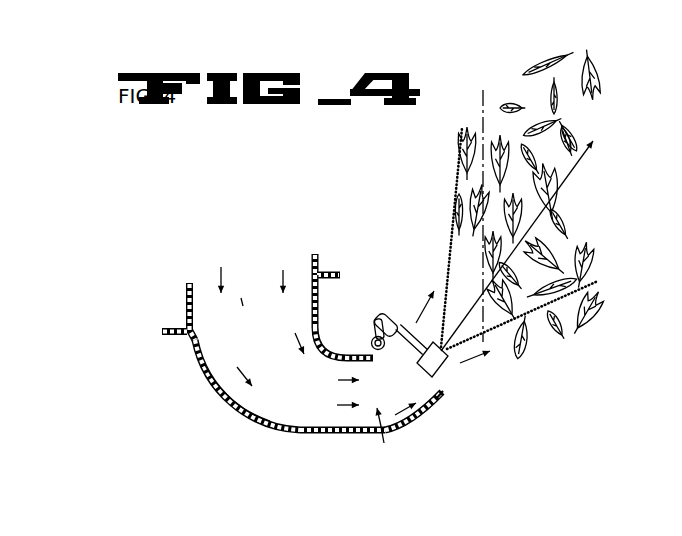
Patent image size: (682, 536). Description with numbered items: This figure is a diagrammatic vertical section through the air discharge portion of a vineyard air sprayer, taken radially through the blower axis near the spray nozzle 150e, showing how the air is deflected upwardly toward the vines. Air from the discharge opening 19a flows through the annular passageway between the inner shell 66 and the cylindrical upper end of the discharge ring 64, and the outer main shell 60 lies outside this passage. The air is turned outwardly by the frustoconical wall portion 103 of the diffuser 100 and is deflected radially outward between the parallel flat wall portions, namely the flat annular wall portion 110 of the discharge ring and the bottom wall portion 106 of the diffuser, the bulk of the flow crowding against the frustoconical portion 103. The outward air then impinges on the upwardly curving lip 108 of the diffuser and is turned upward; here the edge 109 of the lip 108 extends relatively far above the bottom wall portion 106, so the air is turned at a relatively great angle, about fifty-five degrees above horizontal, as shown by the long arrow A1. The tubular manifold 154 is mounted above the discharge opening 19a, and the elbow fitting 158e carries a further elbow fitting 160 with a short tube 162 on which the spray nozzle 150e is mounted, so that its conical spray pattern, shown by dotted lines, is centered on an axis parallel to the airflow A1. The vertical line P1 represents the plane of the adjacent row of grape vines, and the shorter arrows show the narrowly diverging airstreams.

The outer main shell 60 is at (318, 257).
The discharge ring 64 is at (311, 312).
The inner shell 66 is at (186, 288).
The diffuser 100 is at (205, 382).
The frustoconical wall portion 103 is at (226, 400).
The bottom wall portion 106 is at (338, 427).
The lip 108 is at (426, 409).
The edge 109 is at (443, 393).
The flat annular wall portion 110 is at (357, 359).
The spray nozzle 150e is at (441, 368).
The tubular manifold 154 is at (371, 341).
The elbow fitting 158e is at (375, 318).
The elbow fitting 160 is at (390, 317).
The short tube 162 is at (412, 353).
The discharge opening 19a is at (385, 440).
The plane P1 is at (482, 122).
The arrow A1 is at (562, 183).